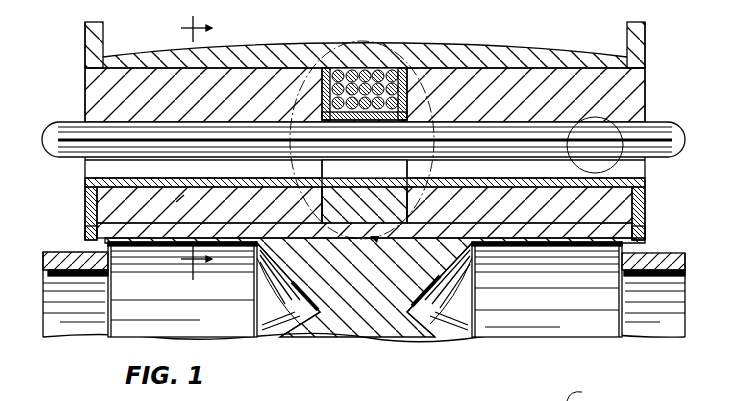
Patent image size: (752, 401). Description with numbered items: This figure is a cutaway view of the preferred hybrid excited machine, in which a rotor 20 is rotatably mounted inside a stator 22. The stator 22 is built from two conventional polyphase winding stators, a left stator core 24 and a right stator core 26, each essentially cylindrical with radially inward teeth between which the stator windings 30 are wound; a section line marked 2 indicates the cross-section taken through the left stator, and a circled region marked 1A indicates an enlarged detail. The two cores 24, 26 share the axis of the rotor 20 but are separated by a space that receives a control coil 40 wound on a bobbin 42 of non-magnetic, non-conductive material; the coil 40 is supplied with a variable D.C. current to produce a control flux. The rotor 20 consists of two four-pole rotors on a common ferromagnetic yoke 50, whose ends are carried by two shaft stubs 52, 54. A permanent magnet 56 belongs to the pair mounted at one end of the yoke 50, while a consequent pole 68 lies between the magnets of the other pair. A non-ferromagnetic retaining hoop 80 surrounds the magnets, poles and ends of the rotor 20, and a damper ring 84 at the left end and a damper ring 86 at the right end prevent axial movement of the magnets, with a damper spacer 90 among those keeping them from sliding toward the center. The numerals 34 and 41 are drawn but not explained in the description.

The rotor 20 is at (364, 350).
The stator 22 is at (452, 31).
The left stator core 24 is at (90, 90).
The right stator core 26 is at (640, 99).
The stator windings 30 is at (68, 108).
The lower member 34 is at (588, 394).
The control coil 40 is at (356, 68).
The coil side region 41 is at (292, 68).
The bobbin 42 is at (432, 105).
The ferromagnetic yoke 50 is at (258, 283).
The shaft stub 52 is at (104, 278).
The shaft stub 54 is at (643, 272).
The permanent magnet 56 is at (86, 202).
The consequent pole 68 is at (645, 210).
The retaining hoop 80 is at (334, 187).
The damper ring 84 is at (86, 229).
The damper ring 86 is at (645, 236).
The damper spacer 90 is at (373, 196).
The detail view indicator 1A is at (589, 118).
The section line 2 is at (188, 148).